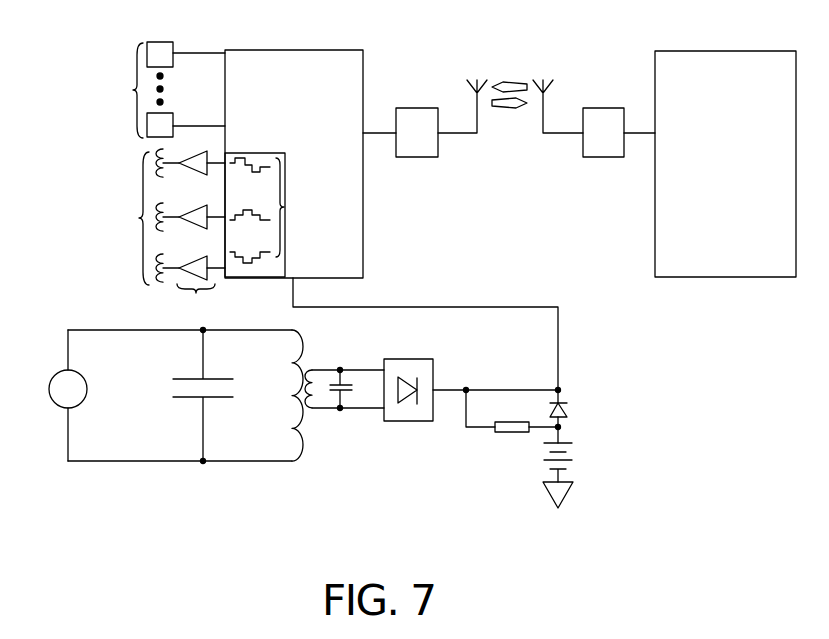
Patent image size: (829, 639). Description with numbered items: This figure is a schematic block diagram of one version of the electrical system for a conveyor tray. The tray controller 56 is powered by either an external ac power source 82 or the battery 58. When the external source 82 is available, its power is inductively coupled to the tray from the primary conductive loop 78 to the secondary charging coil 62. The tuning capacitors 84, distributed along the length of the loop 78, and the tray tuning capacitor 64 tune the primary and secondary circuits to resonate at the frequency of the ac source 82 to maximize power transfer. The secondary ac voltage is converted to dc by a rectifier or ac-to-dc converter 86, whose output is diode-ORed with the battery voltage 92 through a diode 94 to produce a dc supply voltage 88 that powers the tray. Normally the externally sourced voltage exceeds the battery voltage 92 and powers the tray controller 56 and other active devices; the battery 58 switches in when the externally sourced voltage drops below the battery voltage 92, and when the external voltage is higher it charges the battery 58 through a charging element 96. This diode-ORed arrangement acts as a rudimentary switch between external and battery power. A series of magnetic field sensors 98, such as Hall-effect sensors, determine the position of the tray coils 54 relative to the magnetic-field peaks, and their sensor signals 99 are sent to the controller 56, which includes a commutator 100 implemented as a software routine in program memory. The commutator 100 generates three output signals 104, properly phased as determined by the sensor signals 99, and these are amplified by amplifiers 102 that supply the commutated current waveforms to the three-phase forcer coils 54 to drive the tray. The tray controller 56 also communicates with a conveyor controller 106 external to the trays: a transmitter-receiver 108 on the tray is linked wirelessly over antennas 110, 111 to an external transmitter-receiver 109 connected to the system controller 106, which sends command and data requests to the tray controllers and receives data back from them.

The forcer coils 54 is at (144, 217).
The tray controller 56 is at (285, 60).
The battery 58 is at (570, 461).
The secondary charging coil 62 is at (312, 408).
The tray tuning capacitor 64 is at (342, 370).
The primary conductive loop 78 is at (288, 462).
The external ac power source 82 is at (60, 398).
The tuning capacitors 84 is at (190, 398).
The rectifier or ac-to-dc converter 86 is at (405, 421).
The dc supply voltage 88 is at (365, 307).
The battery voltage 92 is at (565, 433).
The diode 94 is at (568, 408).
The charging element 96 is at (507, 432).
The magnetic field sensors 98 is at (136, 90).
The sensor signals 99 is at (203, 50).
The commutator 100 is at (245, 277).
The amplifiers 102 is at (201, 235).
The output signals 104 is at (284, 207).
The conveyor controller 106 is at (715, 55).
The transmitter-receiver 108 is at (422, 157).
The external transmitter-receiver 109 is at (593, 147).
The tray antenna 110 is at (470, 90).
The antenna 111 is at (548, 90).